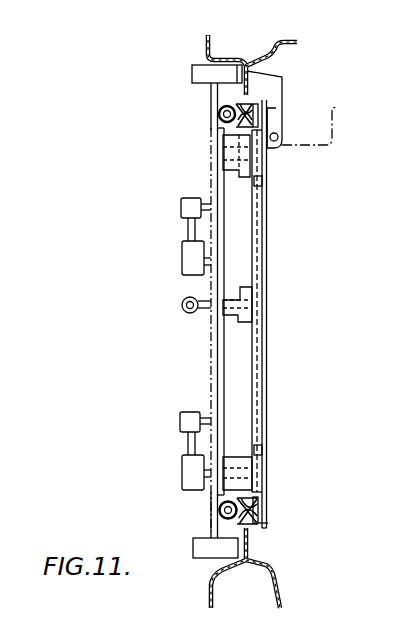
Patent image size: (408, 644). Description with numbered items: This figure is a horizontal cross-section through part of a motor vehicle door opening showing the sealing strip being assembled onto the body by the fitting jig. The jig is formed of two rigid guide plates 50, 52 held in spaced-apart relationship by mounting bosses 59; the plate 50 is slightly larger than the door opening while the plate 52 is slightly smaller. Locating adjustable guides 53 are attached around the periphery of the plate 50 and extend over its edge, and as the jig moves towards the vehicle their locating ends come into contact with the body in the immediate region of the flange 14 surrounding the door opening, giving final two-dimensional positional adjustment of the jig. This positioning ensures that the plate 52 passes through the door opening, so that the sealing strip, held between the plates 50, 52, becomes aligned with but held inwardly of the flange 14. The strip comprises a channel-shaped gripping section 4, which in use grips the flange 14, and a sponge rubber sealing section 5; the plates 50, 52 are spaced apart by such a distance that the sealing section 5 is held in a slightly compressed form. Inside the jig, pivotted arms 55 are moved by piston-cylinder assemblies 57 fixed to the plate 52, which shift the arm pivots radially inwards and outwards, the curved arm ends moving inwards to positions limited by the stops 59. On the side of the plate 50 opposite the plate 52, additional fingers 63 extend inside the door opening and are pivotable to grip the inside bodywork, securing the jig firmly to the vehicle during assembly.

The gripping section 4 is at (256, 130).
The sealing section 5 is at (226, 113).
The flange 14 is at (242, 86).
The guide plate 50 is at (212, 362).
The guide plate 52 is at (262, 487).
The locating adjustable guides 53 is at (195, 76).
The pivotted arms 55 is at (240, 243).
The piston-cylinder assemblies 57 is at (185, 258).
The mounting bosses 59 is at (258, 180).
The fingers 63 is at (312, 148).